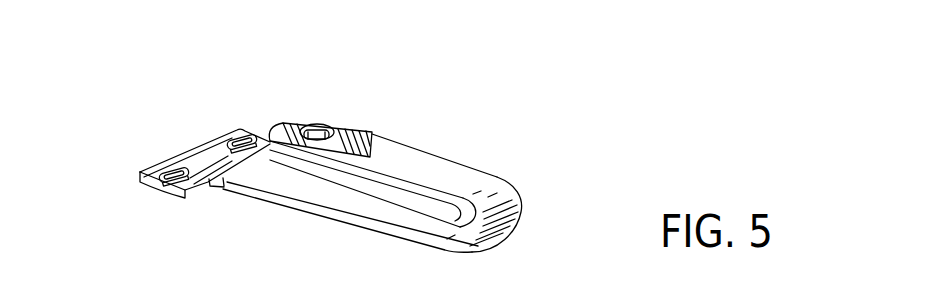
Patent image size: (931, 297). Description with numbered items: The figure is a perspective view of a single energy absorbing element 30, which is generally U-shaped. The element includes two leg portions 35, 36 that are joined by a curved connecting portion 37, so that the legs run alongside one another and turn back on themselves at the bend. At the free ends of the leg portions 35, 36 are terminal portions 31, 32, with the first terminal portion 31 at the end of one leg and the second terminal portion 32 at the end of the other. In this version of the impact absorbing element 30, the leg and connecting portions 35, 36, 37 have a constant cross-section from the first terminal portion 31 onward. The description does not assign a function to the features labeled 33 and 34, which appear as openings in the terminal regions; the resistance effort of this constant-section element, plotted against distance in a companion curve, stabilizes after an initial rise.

The energy absorbing element 30 is at (330, 104).
The first terminal portion 31 is at (197, 146).
The second terminal portion 32 is at (288, 122).
The mounting slots 33 is at (240, 136).
The hole 34 is at (335, 128).
The leg portion 35 is at (383, 215).
The leg portion 36 is at (432, 155).
The curved connecting portion 37 is at (514, 200).